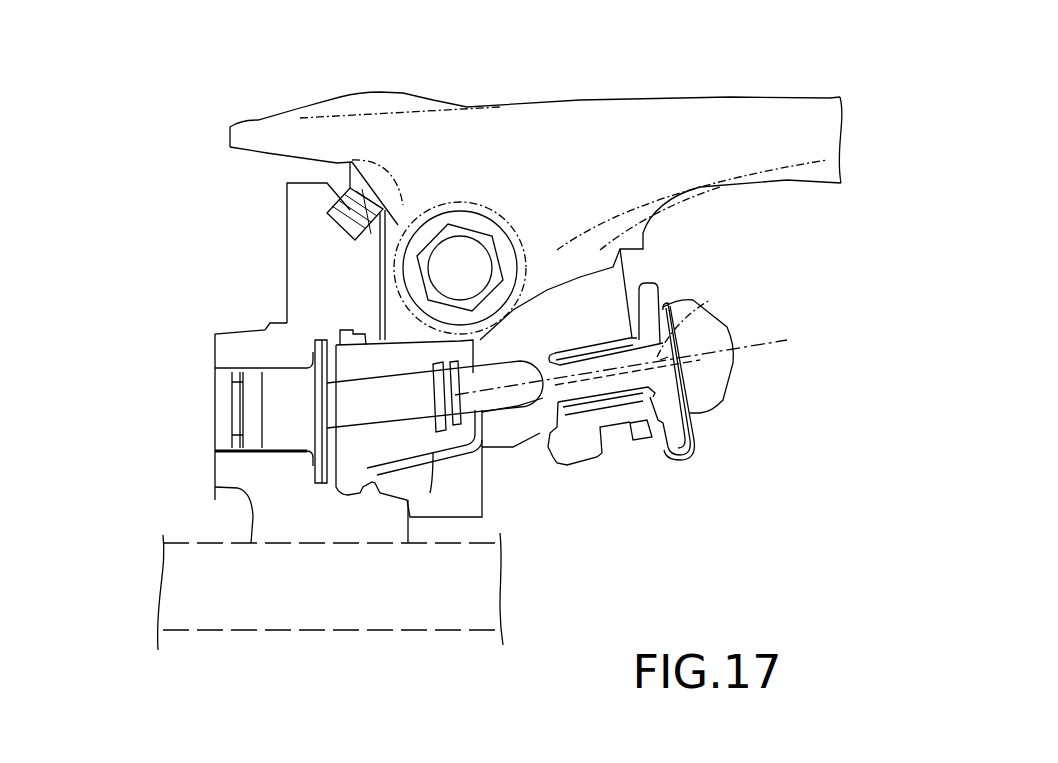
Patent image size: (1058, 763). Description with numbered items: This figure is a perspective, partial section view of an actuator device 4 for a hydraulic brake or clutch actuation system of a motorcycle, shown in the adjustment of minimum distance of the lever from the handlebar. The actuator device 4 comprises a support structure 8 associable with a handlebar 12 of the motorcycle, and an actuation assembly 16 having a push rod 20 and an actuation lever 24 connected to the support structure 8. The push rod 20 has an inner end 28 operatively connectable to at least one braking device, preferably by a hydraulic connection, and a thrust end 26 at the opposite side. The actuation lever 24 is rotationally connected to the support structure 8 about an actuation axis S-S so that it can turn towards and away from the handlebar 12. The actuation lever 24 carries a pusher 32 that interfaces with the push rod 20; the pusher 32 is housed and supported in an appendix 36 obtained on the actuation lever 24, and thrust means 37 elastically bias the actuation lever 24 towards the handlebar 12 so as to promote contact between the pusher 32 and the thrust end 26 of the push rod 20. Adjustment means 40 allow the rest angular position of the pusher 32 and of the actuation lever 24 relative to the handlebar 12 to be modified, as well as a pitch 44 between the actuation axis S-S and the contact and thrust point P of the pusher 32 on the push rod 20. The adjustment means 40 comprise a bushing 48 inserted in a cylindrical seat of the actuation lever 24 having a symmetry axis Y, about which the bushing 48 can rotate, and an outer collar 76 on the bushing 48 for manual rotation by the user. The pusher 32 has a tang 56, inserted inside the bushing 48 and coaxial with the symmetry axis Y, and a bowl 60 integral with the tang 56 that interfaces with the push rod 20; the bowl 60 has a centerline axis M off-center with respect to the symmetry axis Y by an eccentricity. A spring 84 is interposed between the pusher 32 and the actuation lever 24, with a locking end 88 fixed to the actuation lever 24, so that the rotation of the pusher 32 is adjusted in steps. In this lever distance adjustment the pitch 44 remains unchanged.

The actuator device 4 is at (137, 240).
The support structure 8 is at (260, 345).
The handlebar 12 is at (186, 0).
The actuation assembly 16 is at (216, 424).
The push rod 20 is at (385, 410).
The actuation lever 24 is at (730, 127).
The thrust end 26 is at (533, 412).
The inner end 28 is at (310, 403).
The pusher 32 is at (610, 368).
The appendix 36 is at (590, 450).
The thrust means 37 is at (350, 187).
The adjustment means 40 is at (783, 367).
The pitch 44 is at (460, 268).
The bushing 48 is at (727, 403).
The tang 56 is at (657, 357).
The bowl 60 is at (513, 447).
The outer collar 76 is at (641, 283).
The spring 84 is at (692, 448).
The locking end 88 is at (657, 450).
The contact and thrust point P is at (543, 380).
The centerline axis M is at (797, 337).
The symmetry axis Y is at (787, 337).
The actuation axis S-S is at (545, 395).